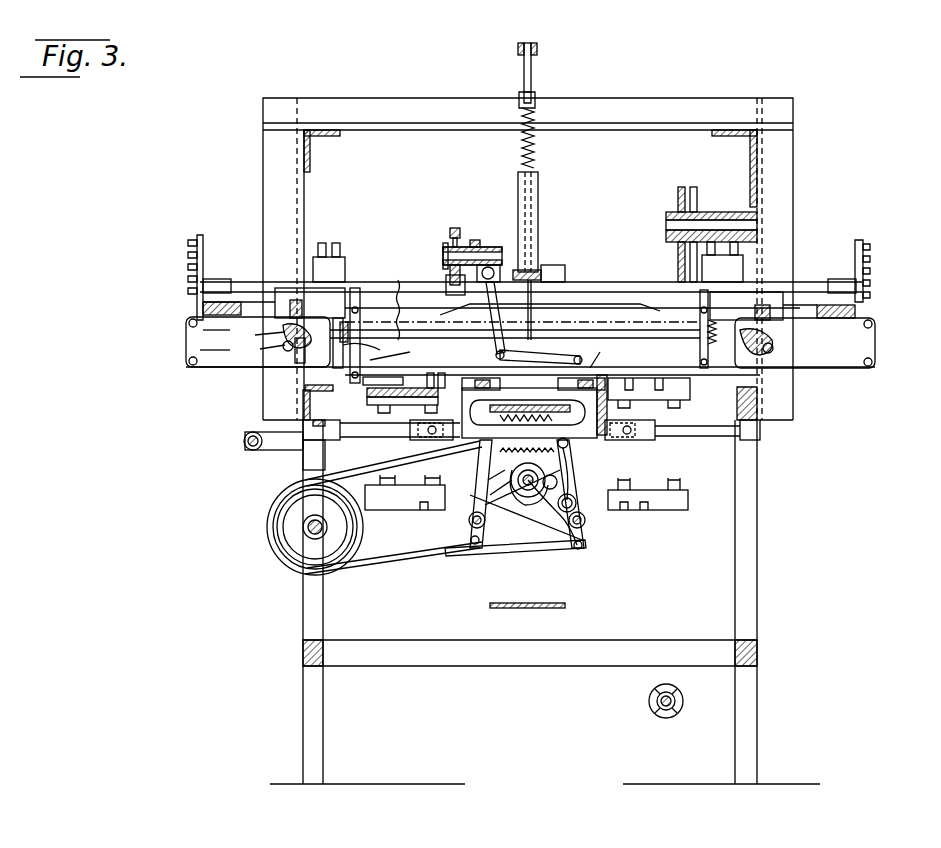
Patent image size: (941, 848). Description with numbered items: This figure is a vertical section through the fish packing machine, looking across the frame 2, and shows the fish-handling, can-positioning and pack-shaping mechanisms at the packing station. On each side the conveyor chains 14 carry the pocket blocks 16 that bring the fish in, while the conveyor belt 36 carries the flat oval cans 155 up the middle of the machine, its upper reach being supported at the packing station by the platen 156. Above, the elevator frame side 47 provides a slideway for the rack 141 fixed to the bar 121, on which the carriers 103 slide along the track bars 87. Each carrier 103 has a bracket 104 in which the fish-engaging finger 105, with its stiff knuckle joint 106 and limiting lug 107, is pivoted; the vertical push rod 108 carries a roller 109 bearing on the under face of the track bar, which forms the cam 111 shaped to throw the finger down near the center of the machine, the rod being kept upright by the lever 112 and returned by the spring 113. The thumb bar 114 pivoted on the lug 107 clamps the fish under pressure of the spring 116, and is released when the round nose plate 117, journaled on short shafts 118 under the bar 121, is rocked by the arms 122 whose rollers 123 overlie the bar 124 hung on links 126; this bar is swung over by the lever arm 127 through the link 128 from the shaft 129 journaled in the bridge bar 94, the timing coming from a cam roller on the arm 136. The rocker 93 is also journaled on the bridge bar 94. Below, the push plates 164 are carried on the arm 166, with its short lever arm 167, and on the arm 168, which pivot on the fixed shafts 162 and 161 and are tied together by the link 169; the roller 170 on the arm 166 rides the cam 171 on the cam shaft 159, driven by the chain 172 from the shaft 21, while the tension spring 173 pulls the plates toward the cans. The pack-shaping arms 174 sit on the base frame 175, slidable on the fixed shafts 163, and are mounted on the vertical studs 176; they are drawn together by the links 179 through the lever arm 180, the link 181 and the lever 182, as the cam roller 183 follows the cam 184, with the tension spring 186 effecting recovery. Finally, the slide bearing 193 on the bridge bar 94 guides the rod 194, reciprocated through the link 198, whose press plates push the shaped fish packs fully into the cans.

The frame 2 is at (704, 122).
The conveyor chains 14 is at (680, 410).
The pocket blocks 16 is at (688, 500).
The shaft 21 is at (315, 535).
The conveyor belt 36 is at (560, 603).
The sides 47 is at (216, 333).
The track bars 87 is at (432, 296).
The rocker 93 is at (448, 233).
The bridge bar 94 is at (505, 255).
The carrier 103 is at (351, 300).
The bracket 104 is at (355, 378).
The fish-engaging finger 105 is at (372, 405).
The knuckle joint 106 is at (327, 405).
The lug 107 is at (329, 390).
The push rod 108 is at (374, 349).
The roller 109 is at (370, 290).
The cam 111 is at (600, 306).
The lever 112 is at (358, 335).
The spring 113 is at (330, 322).
The thumb bar 114 is at (404, 349).
The spring 116 is at (395, 333).
The round nose plate 117 is at (300, 360).
The short shaft 118 is at (283, 334).
The bar 121 is at (310, 303).
The arm 122 is at (261, 348).
The roller 123 is at (290, 350).
The bar 124 is at (230, 365).
The links 126 is at (216, 348).
The lever arm 127 is at (492, 337).
The link 128 is at (572, 363).
The shaft 129 is at (488, 270).
The arm 136 is at (580, 435).
The rack 141 is at (402, 299).
The cans 155 is at (510, 400).
The platen 156 is at (526, 427).
The cam shaft 159 is at (548, 535).
The fixed shaft 161 is at (468, 520).
The fixed shaft 162 is at (586, 522).
The fixed shafts 163 is at (372, 435).
The push plates 164 is at (550, 400).
The arm 166 is at (568, 445).
The short lever arm 167 is at (582, 540).
The arm 168 is at (500, 460).
The link 169 is at (565, 553).
The roller 170 is at (548, 480).
The cam 171 is at (520, 528).
The chain 172 is at (400, 565).
The tension spring 173 is at (527, 409).
The pack-shaping arms 174 is at (611, 352).
The base frame 175 is at (660, 395).
The vertical studs 176 is at (632, 362).
The links 179 is at (440, 462).
The lever arm 180 is at (575, 508).
The link 181 is at (490, 545).
The lever 182 is at (488, 478).
The cam roller 183 is at (572, 500).
The cam 184 is at (490, 493).
The tension spring 186 is at (556, 478).
The slide bearing 193 is at (538, 182).
The rod 194 is at (534, 150).
The link 198 is at (531, 75).